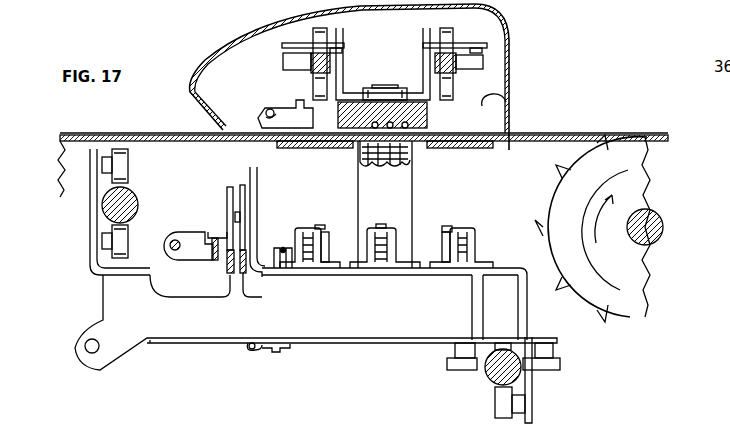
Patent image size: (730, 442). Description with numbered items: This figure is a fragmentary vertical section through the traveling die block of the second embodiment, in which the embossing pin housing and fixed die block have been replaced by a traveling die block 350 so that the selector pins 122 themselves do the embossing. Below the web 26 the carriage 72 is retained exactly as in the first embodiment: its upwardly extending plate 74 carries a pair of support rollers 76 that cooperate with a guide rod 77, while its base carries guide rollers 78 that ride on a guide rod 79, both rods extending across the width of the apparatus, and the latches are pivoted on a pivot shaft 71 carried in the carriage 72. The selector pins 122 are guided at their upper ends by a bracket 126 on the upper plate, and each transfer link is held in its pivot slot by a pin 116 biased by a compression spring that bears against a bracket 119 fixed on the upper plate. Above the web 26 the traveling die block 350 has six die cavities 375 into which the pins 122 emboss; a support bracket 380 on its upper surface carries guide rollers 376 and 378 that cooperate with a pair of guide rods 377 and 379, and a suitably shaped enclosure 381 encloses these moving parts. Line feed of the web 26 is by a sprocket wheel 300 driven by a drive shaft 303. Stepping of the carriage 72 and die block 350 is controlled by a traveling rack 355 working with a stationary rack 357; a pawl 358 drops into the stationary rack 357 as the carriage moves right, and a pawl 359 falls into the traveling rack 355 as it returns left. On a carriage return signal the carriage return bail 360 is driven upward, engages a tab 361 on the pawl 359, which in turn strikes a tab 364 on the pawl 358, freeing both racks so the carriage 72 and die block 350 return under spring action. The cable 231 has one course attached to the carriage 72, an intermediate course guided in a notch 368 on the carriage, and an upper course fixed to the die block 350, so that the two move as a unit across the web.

The web 26 is at (585, 133).
The pivot shaft 71 is at (92, 353).
The carriage 72 is at (378, 340).
The upwardly extending plate 74 is at (92, 228).
The support rollers 76 is at (128, 165).
The guide rod 77 is at (102, 205).
The guide rollers 78 is at (560, 364).
The guide rod 79 is at (517, 380).
The pin 116 is at (458, 228).
The bracket 119 is at (362, 235).
The selector pins 122 is at (410, 164).
The bracket 126 is at (405, 190).
The cable 231 is at (262, 118).
The sprocket wheels 300 is at (630, 300).
The drive shaft 303 is at (665, 228).
The traveling die block 350 is at (402, 95).
The traveling rack 355 is at (228, 282).
The stationary rack 357 is at (244, 285).
The pawl 358 is at (243, 185).
The pawl 359 is at (250, 200).
The carriage return bail 360 is at (200, 240).
The tab 361 is at (212, 232).
The tab 364 is at (227, 212).
The notch 368 is at (278, 272).
The die cavities 375 is at (427, 116).
The guide rollers 376 is at (283, 60).
The guide rod 377 is at (312, 70).
The guide rollers 378 is at (483, 60).
The guide rod 379 is at (455, 75).
The support bracket 380 is at (345, 62).
The enclosure 381 is at (240, 45).